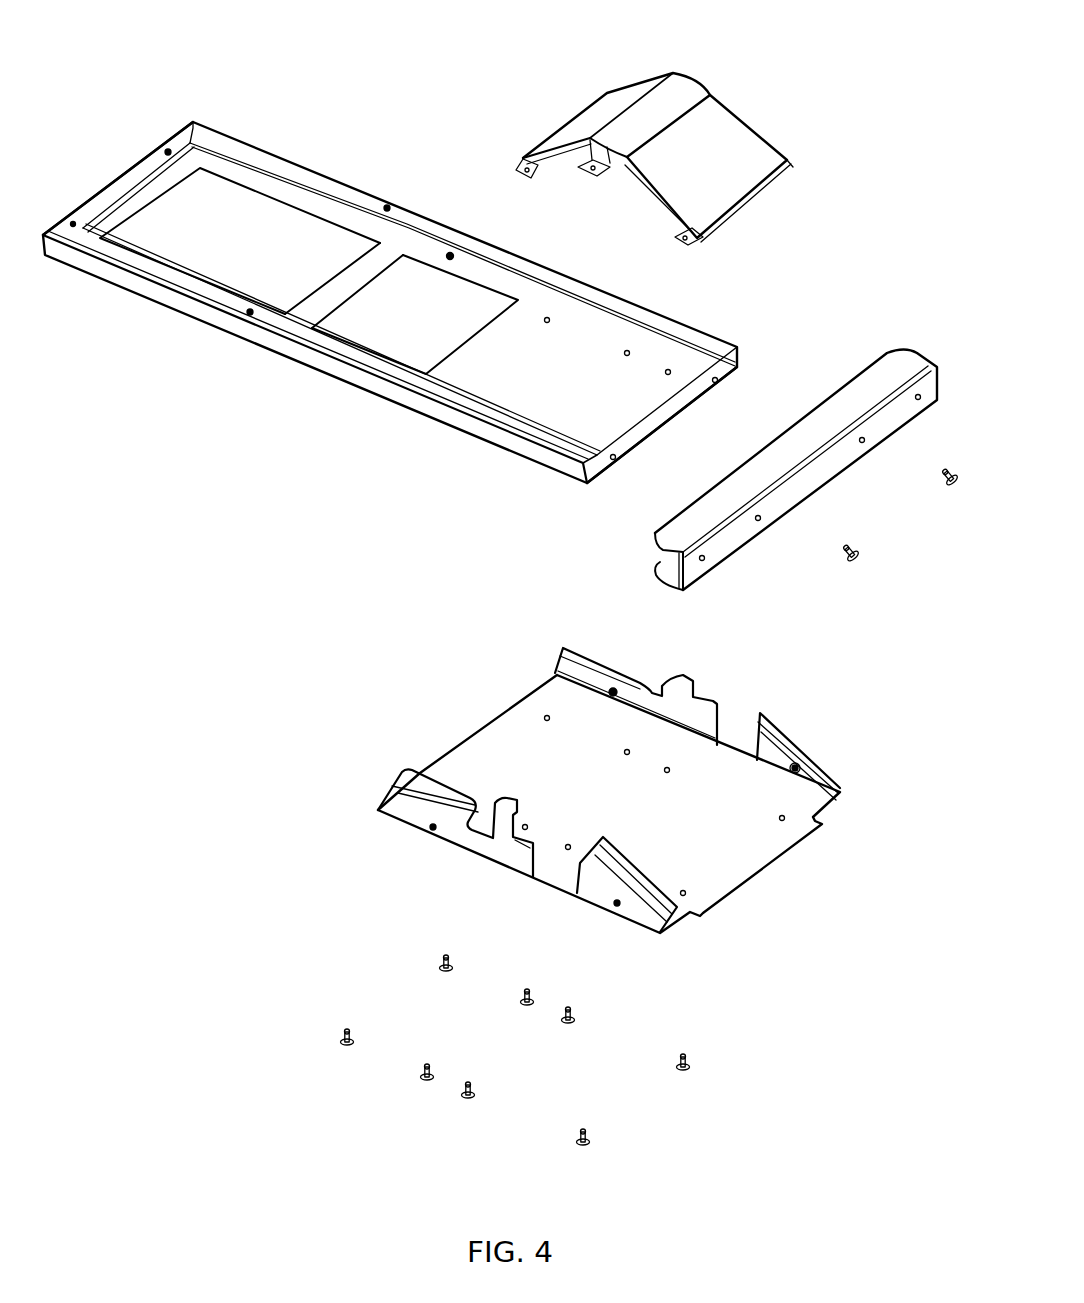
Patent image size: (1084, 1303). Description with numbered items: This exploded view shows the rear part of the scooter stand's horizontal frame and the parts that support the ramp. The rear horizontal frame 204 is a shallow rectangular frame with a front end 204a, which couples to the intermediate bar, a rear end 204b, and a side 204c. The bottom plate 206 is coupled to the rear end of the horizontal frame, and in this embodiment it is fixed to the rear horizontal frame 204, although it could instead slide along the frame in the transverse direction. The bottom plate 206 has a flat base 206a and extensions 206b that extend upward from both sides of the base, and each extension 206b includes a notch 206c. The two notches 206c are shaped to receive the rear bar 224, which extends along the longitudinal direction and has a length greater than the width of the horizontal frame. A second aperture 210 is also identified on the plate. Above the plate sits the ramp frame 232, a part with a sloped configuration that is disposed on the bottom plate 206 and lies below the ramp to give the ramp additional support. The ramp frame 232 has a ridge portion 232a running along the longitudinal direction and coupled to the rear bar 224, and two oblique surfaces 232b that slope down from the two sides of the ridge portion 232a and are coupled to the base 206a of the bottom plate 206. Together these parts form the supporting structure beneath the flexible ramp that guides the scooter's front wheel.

The rear horizontal frame 204 is at (485, 391).
The front end 204a is at (130, 183).
The rear end 204b is at (633, 443).
The side 204c is at (282, 343).
The bottom plate 206 is at (720, 855).
The base 206a is at (487, 743).
The extensions 206b is at (493, 845).
The notch 206c is at (730, 748).
The second aperture 210 is at (607, 907).
The rear bar 224 is at (803, 478).
The ramp frame 232 is at (722, 151).
The ridge portion 232a is at (675, 85).
The oblique surface 232b is at (737, 200).